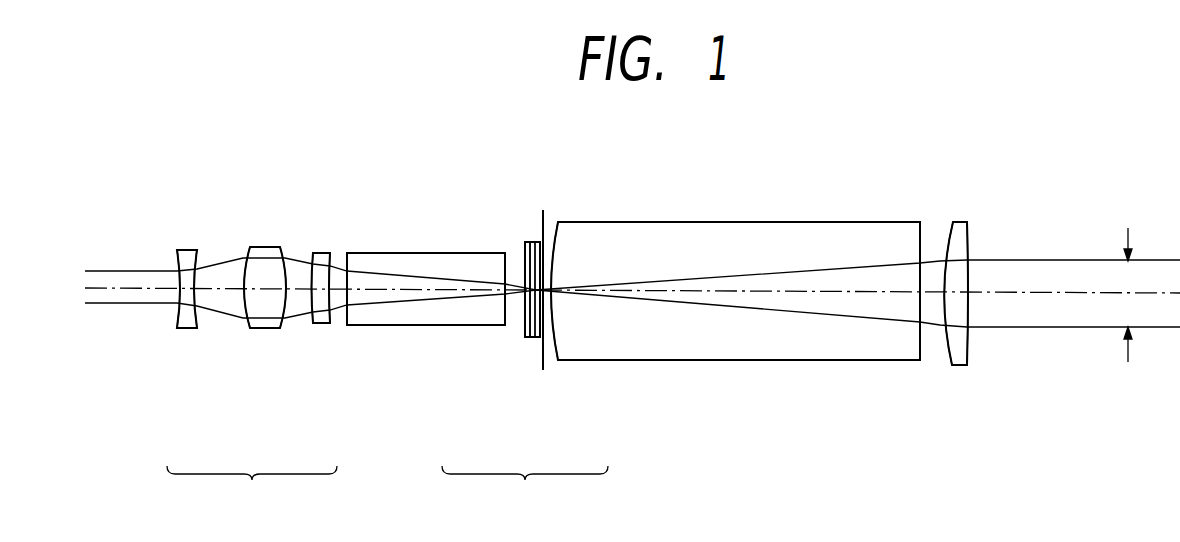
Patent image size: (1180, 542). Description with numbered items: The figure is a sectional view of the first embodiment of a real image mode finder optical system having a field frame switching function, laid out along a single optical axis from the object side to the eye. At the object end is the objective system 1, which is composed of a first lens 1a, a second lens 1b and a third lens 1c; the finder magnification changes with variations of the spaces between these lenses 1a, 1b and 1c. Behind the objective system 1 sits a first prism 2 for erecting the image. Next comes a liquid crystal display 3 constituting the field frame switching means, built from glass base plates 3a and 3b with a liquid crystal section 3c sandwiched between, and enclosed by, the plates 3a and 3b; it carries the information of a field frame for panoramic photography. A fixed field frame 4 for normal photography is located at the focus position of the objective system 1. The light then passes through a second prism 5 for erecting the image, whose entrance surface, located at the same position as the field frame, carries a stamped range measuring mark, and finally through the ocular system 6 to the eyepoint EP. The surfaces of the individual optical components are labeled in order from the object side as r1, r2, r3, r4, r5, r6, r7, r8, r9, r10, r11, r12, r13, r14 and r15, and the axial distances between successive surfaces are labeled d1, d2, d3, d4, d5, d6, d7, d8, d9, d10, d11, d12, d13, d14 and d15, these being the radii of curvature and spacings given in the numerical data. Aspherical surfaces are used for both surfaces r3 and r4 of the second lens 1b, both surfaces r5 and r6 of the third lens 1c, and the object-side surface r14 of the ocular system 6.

The objective system 1 is at (252, 492).
The first lens 1a is at (188, 250).
The second lens 1b is at (265, 247).
The third lens 1c is at (322, 253).
The first prism 2 is at (427, 262).
The liquid crystal display 3 is at (525, 380).
The glass base plate 3a is at (527, 342).
The glass base plate 3b is at (538, 342).
The liquid crystal section 3c is at (531, 342).
The fixed field frame 4 is at (543, 210).
The second prism 5 is at (748, 240).
The ocular system 6 is at (957, 232).
The eyepoint EP is at (1128, 280).
The surface r1 is at (175, 258).
The surface r2 is at (198, 257).
The surface r3 is at (247, 253).
The surface r4 is at (283, 253).
The surface r5 is at (315, 260).
The surface r6 is at (330, 264).
The surface r7 is at (363, 263).
The surface r8 is at (503, 262).
The surface r9 is at (523, 243).
The surface r10 is at (532, 242).
The surface r11 is at (546, 250).
The surface r12 is at (562, 226).
The surface r13 is at (925, 237).
The surface r14 is at (946, 235).
The surface r15 is at (968, 248).
The distance d1 is at (177, 316).
The distance d2 is at (218, 289).
The distance d3 is at (267, 289).
The distance d4 is at (298, 290).
The distance d5 is at (320, 289).
The distance d6 is at (338, 290).
The distance d7 is at (427, 290).
The distance d8 is at (518, 295).
The distance d9 is at (526, 293).
The distance d10 is at (548, 332).
The distance d11 is at (542, 308).
The distance d12 is at (737, 293).
The distance d13 is at (930, 293).
The distance d14 is at (963, 343).
The distance d15 is at (1048, 293).